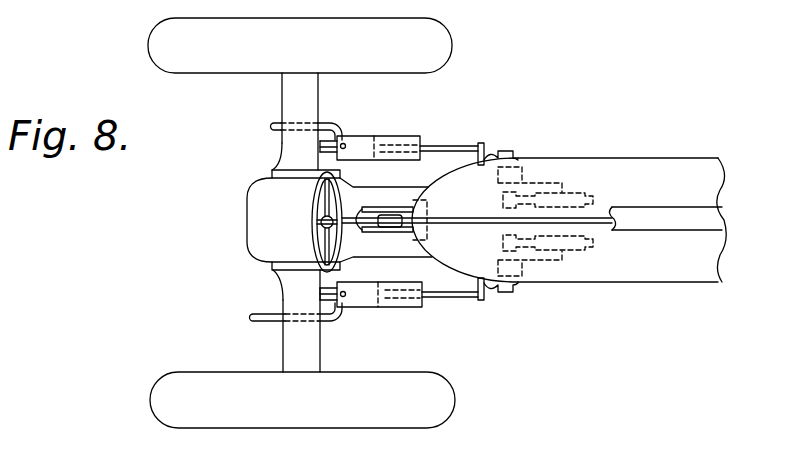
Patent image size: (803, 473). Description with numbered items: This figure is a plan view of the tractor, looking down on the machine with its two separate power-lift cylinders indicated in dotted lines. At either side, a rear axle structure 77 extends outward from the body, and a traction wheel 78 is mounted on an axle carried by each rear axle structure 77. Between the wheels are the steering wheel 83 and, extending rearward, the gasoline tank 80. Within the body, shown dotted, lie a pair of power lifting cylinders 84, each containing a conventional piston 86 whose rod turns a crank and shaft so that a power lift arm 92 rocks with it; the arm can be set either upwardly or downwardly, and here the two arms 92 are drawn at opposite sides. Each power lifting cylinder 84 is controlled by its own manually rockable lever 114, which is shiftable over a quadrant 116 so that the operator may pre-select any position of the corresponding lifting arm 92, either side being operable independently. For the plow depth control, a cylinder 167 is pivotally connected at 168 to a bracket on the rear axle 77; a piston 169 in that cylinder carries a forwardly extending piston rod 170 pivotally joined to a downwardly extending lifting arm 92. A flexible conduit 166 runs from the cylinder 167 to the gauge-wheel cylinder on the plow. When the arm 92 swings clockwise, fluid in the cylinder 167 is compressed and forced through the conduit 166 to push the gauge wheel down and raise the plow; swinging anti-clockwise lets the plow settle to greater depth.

The rear axle structure 77 is at (296, 108).
The traction wheel 78 is at (212, 60).
The gasoline tank 80 is at (628, 166).
The steering wheel 83 is at (317, 204).
The power lifting cylinder 84 is at (560, 192).
The piston 86 is at (573, 258).
The power lift arm 92 is at (496, 152).
The manually rockable lever 114 is at (418, 226).
The quadrant 116 is at (362, 208).
The flexible conduit 166 is at (272, 128).
The cylinder 167 is at (400, 136).
The pivotal connection 168 is at (350, 112).
The piston 169 is at (378, 133).
The piston rod 170 is at (447, 150).